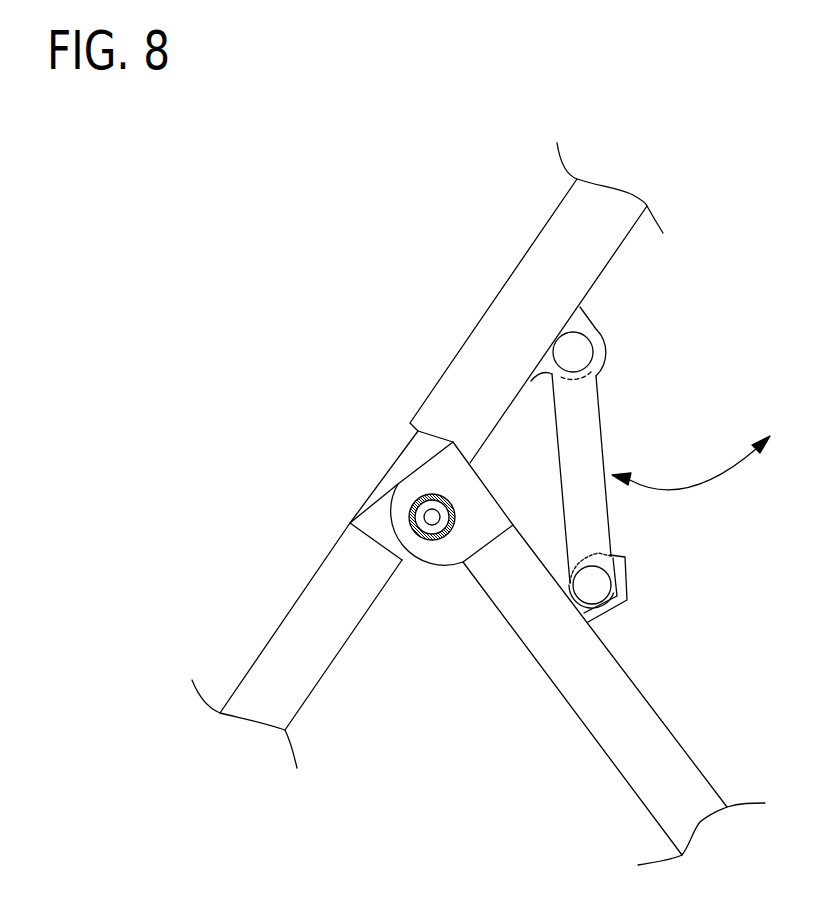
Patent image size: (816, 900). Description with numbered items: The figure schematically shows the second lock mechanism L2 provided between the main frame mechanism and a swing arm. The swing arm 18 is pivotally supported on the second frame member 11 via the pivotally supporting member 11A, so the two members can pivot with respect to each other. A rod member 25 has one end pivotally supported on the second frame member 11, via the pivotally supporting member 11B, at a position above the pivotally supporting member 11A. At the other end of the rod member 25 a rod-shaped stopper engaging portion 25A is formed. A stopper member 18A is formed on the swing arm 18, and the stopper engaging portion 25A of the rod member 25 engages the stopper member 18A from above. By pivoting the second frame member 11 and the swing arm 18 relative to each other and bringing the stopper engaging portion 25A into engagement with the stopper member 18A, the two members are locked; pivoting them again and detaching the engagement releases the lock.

The second frame member 11 is at (357, 634).
The pivotally supporting member 11A is at (428, 514).
The pivotally supporting member 11B is at (597, 331).
The swing arm 18 is at (582, 702).
The stopper member 18A is at (628, 591).
The rod member 25 is at (600, 425).
The stopper engaging portion 25A is at (612, 543).
The second lock mechanism L2 is at (706, 386).